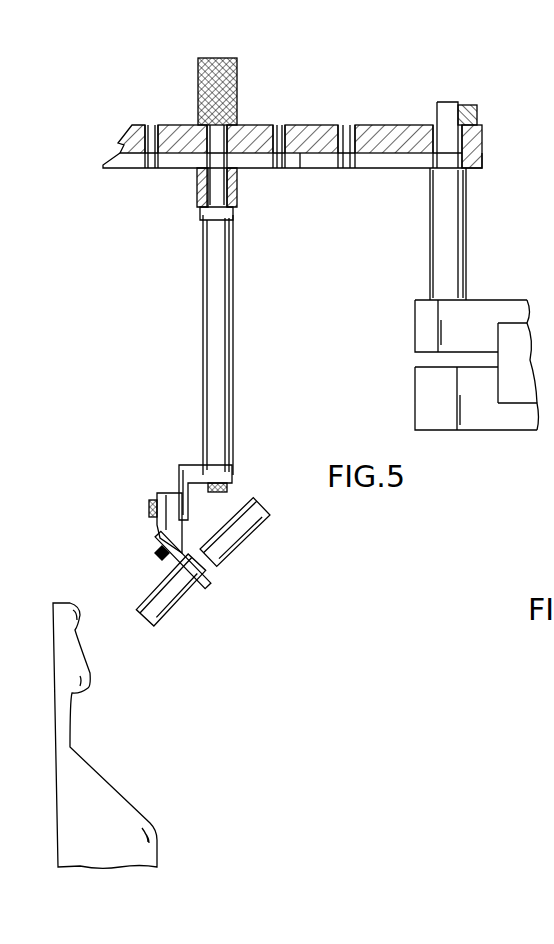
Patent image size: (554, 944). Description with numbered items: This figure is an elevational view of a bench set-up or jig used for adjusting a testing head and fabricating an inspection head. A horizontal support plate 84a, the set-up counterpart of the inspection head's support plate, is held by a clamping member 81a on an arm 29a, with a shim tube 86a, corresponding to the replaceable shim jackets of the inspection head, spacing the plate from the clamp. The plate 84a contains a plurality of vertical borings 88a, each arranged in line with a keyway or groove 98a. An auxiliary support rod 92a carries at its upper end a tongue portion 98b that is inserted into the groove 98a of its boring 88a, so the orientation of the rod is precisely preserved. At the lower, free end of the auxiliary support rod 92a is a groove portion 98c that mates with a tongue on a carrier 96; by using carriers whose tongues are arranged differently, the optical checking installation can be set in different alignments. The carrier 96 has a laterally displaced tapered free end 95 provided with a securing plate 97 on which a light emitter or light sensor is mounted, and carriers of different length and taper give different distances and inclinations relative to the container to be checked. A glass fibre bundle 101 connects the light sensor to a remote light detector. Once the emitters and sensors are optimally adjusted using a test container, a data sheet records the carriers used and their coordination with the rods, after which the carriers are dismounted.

The frame member 29a is at (498, 320).
The clamp blocks 81a is at (425, 395).
The support plate 84a is at (315, 128).
The post 86a is at (430, 248).
The vertical borings 88a is at (149, 126).
The auxiliary support rod 92a is at (233, 352).
The tapered free end 95 is at (162, 560).
The carrier 96 is at (143, 486).
The securing plate 97 is at (201, 588).
The keyway or groove 98a is at (327, 166).
The tongue portion 98b is at (237, 178).
The groove portion 98c is at (217, 473).
The glass fibre bundle 101 is at (246, 540).